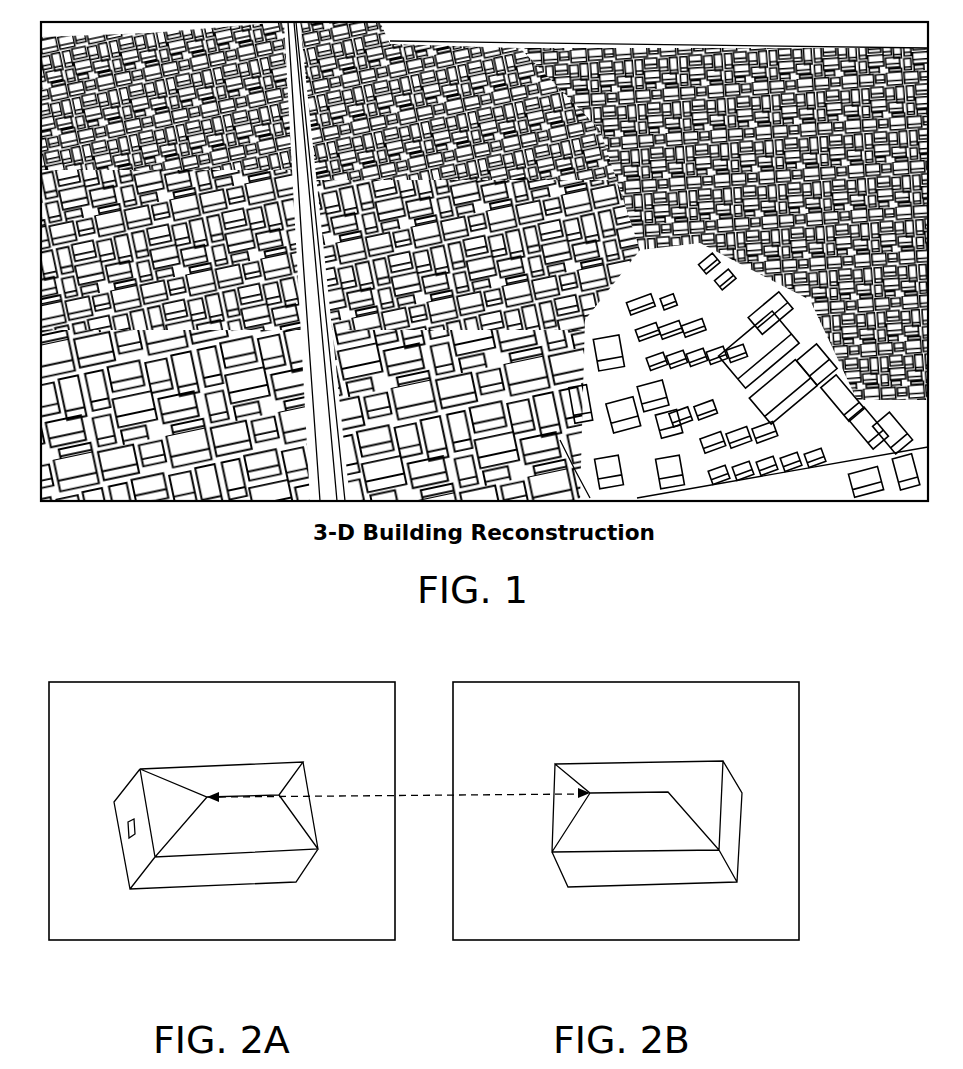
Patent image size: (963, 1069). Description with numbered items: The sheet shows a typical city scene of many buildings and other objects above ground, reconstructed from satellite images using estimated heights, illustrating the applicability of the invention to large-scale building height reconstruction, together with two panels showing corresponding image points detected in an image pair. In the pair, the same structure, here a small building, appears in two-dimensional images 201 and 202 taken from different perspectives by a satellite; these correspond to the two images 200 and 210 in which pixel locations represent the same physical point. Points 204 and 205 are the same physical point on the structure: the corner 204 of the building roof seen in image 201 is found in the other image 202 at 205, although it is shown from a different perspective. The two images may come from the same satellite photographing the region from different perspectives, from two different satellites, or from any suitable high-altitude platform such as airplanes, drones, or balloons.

In FIG. 2A, the image 200 is at (91, 658).
In FIG. 2A, the 2-D image 201 is at (234, 873).
In FIG. 2A, the corner of the building roof 204 is at (207, 788).
In FIG. 2B, the image 210 is at (773, 658).
In FIG. 2B, the 2-D image 202 is at (648, 873).
In FIG. 2B, the corresponding image point 205 is at (591, 788).